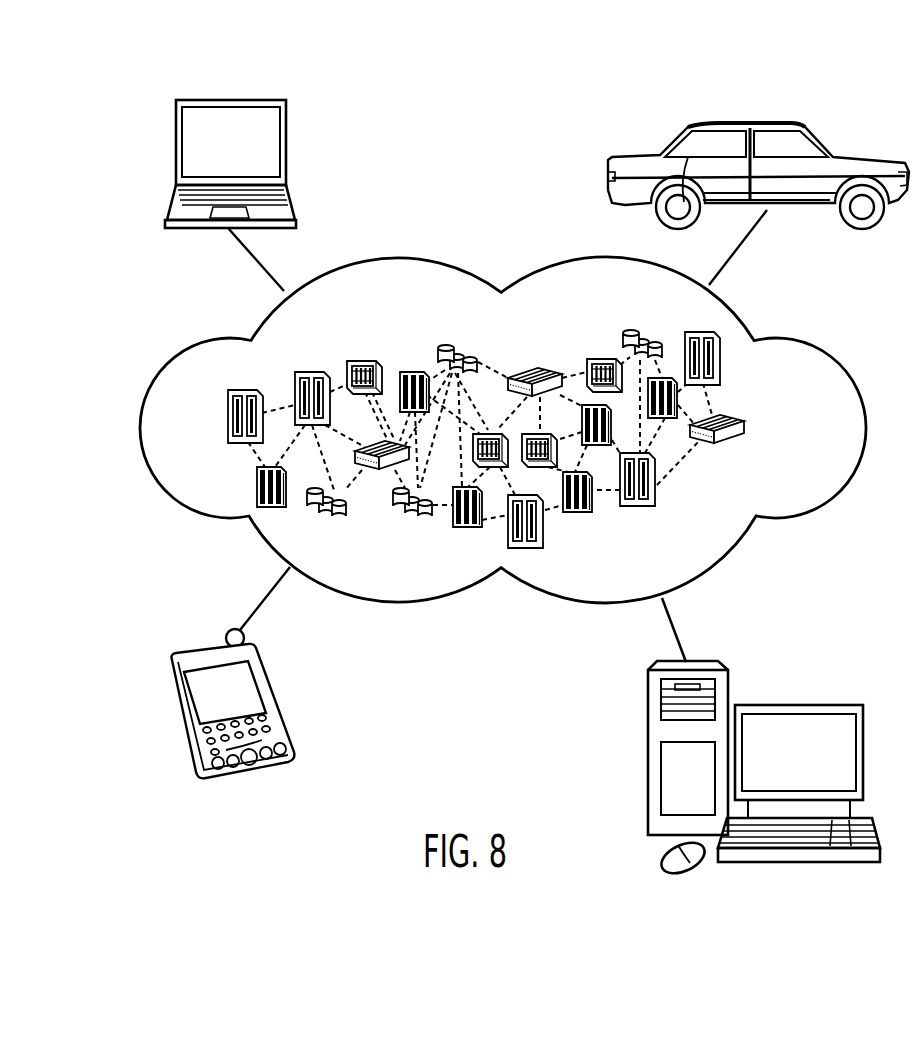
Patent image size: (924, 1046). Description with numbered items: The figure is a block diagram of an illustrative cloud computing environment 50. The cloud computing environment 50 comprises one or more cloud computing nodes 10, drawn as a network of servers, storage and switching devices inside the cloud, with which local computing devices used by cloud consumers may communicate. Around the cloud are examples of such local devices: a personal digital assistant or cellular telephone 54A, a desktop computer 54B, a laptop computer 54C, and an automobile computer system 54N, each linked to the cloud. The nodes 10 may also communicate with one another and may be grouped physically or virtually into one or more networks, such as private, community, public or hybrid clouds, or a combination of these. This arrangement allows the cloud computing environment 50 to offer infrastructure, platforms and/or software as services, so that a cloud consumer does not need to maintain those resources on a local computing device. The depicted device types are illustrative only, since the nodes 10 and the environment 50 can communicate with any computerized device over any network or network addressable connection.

The cloud computing environment 50 is at (812, 346).
The cloud computing node 10 is at (752, 429).
The personal digital assistant or cellular telephone 54A is at (211, 646).
The desktop computer 54B is at (800, 704).
The laptop computer 54C is at (230, 100).
The automobile computer system 54N is at (742, 122).